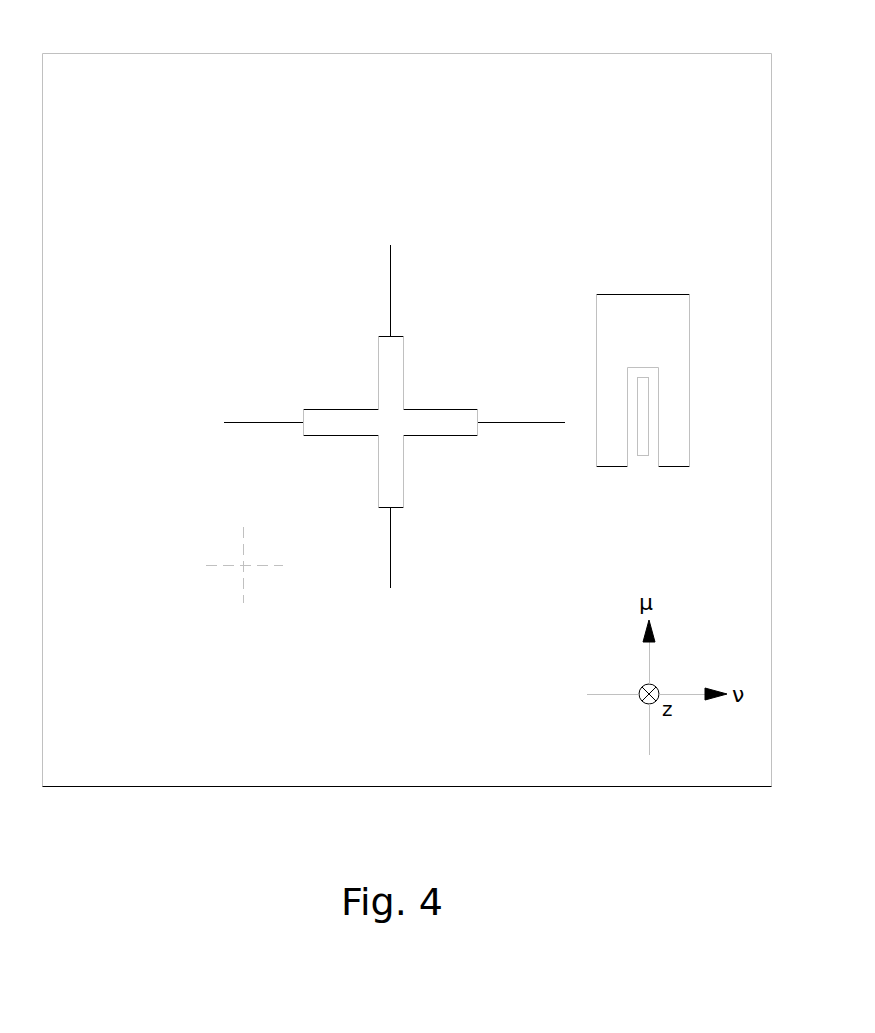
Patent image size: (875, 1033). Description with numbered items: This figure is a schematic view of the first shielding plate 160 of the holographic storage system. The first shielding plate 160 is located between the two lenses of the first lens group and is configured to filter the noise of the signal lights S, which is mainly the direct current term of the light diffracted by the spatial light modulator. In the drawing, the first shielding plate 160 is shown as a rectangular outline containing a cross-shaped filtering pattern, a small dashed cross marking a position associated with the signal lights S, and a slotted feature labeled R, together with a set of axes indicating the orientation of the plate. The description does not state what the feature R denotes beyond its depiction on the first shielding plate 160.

The first shielding plate 160 is at (823, 32).
The radiating element R is at (648, 408).
The signal lights S is at (244, 583).